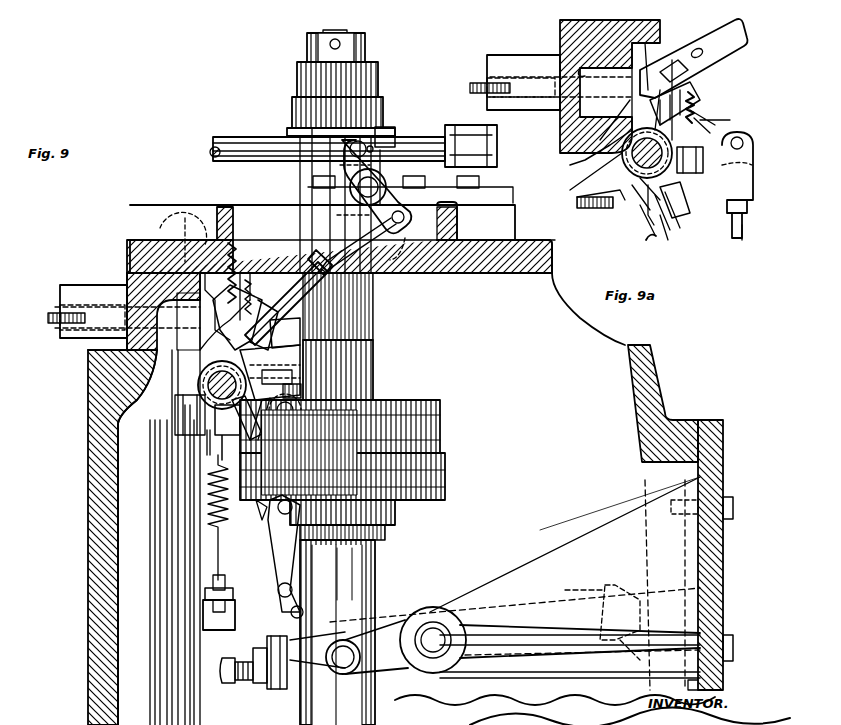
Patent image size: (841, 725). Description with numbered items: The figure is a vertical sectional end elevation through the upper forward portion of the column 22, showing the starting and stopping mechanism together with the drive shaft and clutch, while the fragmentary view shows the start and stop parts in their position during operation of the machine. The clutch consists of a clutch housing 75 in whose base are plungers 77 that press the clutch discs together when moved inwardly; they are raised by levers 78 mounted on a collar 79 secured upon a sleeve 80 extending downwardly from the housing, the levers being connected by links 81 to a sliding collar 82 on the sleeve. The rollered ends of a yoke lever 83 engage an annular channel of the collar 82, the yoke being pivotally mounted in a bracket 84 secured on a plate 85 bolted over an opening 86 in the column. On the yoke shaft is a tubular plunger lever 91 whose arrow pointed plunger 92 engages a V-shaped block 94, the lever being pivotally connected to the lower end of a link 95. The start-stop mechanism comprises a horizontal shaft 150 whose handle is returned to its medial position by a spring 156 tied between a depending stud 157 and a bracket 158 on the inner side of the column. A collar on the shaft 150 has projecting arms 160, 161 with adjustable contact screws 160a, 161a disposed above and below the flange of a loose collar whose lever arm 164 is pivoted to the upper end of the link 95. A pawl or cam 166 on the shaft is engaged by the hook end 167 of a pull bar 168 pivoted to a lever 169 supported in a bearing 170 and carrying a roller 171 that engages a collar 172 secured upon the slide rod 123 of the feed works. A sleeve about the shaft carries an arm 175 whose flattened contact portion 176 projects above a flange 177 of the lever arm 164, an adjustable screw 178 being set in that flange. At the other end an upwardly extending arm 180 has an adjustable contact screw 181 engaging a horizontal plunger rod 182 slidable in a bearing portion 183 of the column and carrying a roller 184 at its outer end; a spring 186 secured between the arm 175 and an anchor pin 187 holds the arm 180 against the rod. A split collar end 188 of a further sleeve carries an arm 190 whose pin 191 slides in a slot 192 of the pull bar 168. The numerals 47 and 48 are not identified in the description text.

In FIG. 9, the column 22 is at (92, 700).
In FIG. 9, the shaft 47 is at (166, 590).
In FIG. 9, the housing 48 is at (150, 415).
In FIG. 9, the clutch housing 75 is at (430, 440).
In FIG. 9, the plungers 77 is at (230, 517).
In FIG. 9, the levers 78 is at (280, 560).
In FIG. 9, the collar 79 is at (398, 510).
In FIG. 9, the sleeve 80 is at (375, 555).
In FIG. 9, the links 81 is at (285, 607).
In FIG. 9, the sliding collar 82 is at (395, 718).
In FIG. 9, the yoke lever 83 is at (420, 620).
In FIG. 9, the bracket 84 is at (593, 528).
In FIG. 9, the plate 85 is at (708, 478).
In FIG. 9, the opening 86 is at (666, 445).
In FIG. 9, the plunger lever 91 is at (395, 620).
In FIG. 9, the arrow pointed plunger 92 is at (628, 588).
In FIG. 9, the V-shaped block 94 is at (665, 600).
In FIG. 9, the link 95 is at (355, 572).
In FIG. 9A, the link 95 is at (742, 240).
In FIG. 9, the slide rod 123 is at (247, 138).
In FIG. 9, the horizontal shaft 150 is at (190, 400).
In FIG. 9A, the horizontal shaft 150 is at (640, 190).
In FIG. 9, the spring 156 is at (208, 500).
In FIG. 9A, the spring 156 is at (635, 220).
In FIG. 9, the depending stud 157 is at (172, 480).
In FIG. 9, the bracket 158 is at (235, 605).
In FIG. 9, the projecting arm 160 is at (302, 348).
In FIG. 9A, the projecting arm 160 is at (672, 240).
In FIG. 9, the adjustable contact screw 160a is at (302, 360).
In FIG. 9, the projecting arm 161 is at (290, 453).
In FIG. 9, the adjustable contact screw 161a is at (290, 420).
In FIG. 9A, the adjustable contact screw 161a is at (682, 220).
In FIG. 9, the lever arm 164 is at (305, 388).
In FIG. 9A, the lever arm 164 is at (688, 195).
In FIG. 9, the pawl or cam 166 is at (198, 365).
In FIG. 9A, the pawl or cam 166 is at (622, 150).
In FIG. 9, the hook end 167 is at (200, 355).
In FIG. 9A, the hook end 167 is at (630, 105).
In FIG. 9, the pull bar 168 is at (282, 262).
In FIG. 9A, the pull bar 168 is at (733, 28).
In FIG. 9, the lever 169 is at (376, 230).
In FIG. 9, the bearing 170 is at (350, 205).
In FIG. 9, the roller 171 is at (383, 120).
In FIG. 9, the collar 172 is at (396, 135).
In FIG. 9, the arm 175 is at (305, 375).
In FIG. 9A, the arm 175 is at (713, 117).
In FIG. 9, the flattened contact portion 176 is at (283, 379).
In FIG. 9, the flange 177 is at (305, 398).
In FIG. 9A, the flange 177 is at (712, 145).
In FIG. 9, the adjustable screw 178 is at (301, 390).
In FIG. 9A, the adjustable screw 178 is at (708, 160).
In FIG. 9, the upwardly extending arm 180 is at (248, 280).
In FIG. 9A, the upwardly extending arm 180 is at (616, 104).
In FIG. 9, the adjustable contact screw 181 is at (182, 250).
In FIG. 9A, the adjustable contact screw 181 is at (630, 40).
In FIG. 9, the plunger rod 182 is at (100, 290).
In FIG. 9A, the plunger rod 182 is at (518, 78).
In FIG. 9, the bearing portion 183 is at (168, 318).
In FIG. 9, the roller 184 is at (75, 310).
In FIG. 9A, the roller 184 is at (470, 84).
In FIG. 9, the spring 186 is at (248, 245).
In FIG. 9A, the spring 186 is at (700, 102).
In FIG. 9, the anchor pin 187 is at (206, 212).
In FIG. 9, the split collar end 188 is at (185, 430).
In FIG. 9A, the split collar end 188 is at (590, 208).
In FIG. 9, the arm 190 is at (300, 330).
In FIG. 9A, the arm 190 is at (700, 90).
In FIG. 9, the pin 191 is at (265, 300).
In FIG. 9A, the pin 191 is at (676, 58).
In FIG. 9, the slot 192 is at (308, 258).
In FIG. 9A, the slot 192 is at (688, 60).